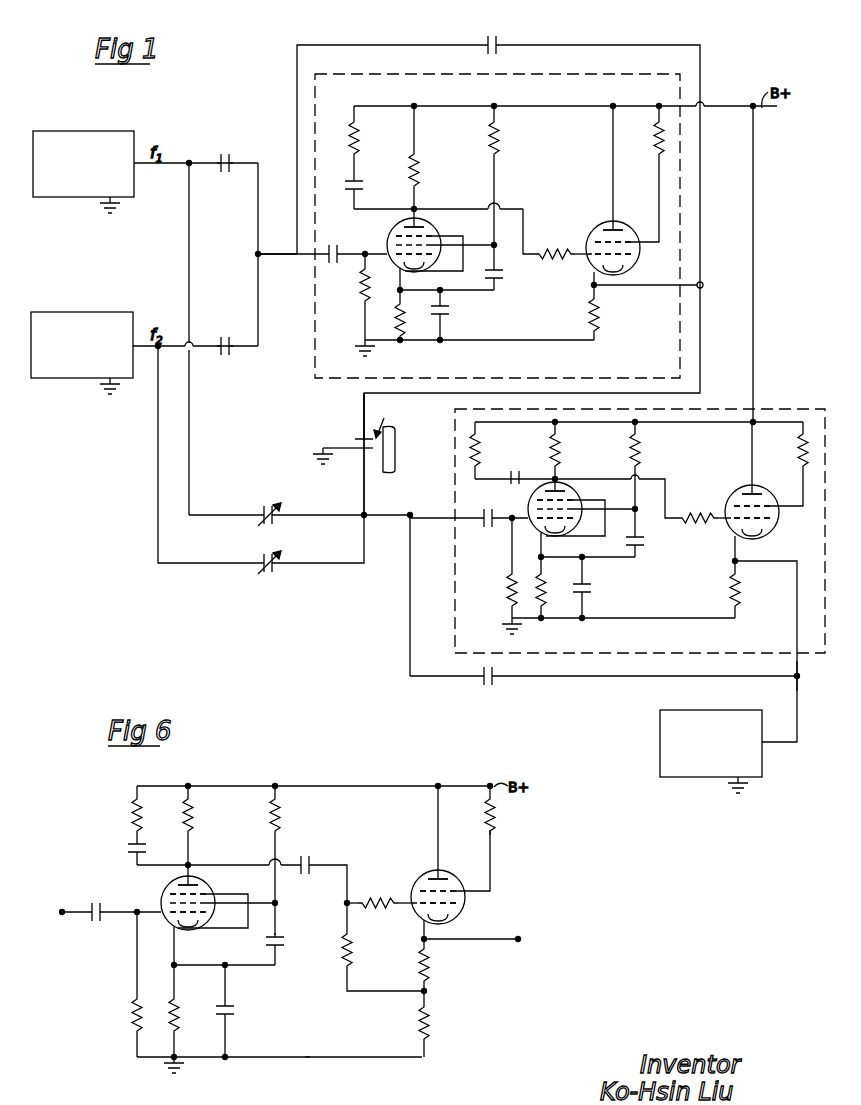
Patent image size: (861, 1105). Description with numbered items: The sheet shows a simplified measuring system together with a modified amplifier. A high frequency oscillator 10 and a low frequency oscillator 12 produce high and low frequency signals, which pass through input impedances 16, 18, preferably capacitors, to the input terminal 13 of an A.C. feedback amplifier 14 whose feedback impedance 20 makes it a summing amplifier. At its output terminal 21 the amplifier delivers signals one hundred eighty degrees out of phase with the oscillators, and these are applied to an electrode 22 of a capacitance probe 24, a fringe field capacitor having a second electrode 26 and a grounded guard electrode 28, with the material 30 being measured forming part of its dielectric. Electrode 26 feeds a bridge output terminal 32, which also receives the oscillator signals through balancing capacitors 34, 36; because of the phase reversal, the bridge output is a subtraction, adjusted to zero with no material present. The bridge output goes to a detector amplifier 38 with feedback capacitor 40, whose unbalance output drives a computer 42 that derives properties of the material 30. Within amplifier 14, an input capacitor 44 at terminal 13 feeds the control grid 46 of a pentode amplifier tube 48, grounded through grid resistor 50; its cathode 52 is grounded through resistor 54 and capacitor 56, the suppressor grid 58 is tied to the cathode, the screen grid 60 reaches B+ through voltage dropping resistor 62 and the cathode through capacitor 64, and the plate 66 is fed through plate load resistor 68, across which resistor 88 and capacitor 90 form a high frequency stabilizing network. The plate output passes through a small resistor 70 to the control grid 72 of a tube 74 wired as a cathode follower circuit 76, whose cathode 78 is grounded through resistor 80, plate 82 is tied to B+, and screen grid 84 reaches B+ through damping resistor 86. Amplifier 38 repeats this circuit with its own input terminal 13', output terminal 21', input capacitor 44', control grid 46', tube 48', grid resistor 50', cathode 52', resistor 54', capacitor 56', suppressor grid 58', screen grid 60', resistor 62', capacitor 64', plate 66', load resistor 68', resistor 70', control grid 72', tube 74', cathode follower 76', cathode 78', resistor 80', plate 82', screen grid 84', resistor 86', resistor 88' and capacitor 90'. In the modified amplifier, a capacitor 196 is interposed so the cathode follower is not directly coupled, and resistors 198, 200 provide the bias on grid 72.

In FIG. 1, the oscillator 10 is at (104, 131).
In FIG. 1, the oscillator 12 is at (103, 312).
In FIG. 1, the input terminal 13 is at (277, 271).
In FIG. 1, the input terminal 13' is at (430, 582).
In FIG. 1, the A.C. feedback amplifier 14 is at (540, 74).
In FIG. 6, the A.C. feedback amplifier 14 is at (304, 1063).
In FIG. 1, the input impedance 16 is at (231, 158).
In FIG. 1, the input impedance 18 is at (231, 341).
In FIG. 1, the feedback impedance 20 is at (498, 42).
In FIG. 1, the output terminal 21 is at (665, 286).
In FIG. 1, the output terminal 21' is at (814, 676).
In FIG. 1, the electrode 22 is at (362, 434).
In FIG. 1, the capacitance probe 24 is at (385, 416).
In FIG. 1, the electrode 26 is at (360, 450).
In FIG. 1, the grounded guard electrode 28 is at (344, 440).
In FIG. 1, the material 30 is at (397, 434).
In FIG. 1, the bridge output terminal 32 is at (368, 514).
In FIG. 1, the balancing capacitor 34 is at (258, 512).
In FIG. 1, the balancing capacitor 36 is at (258, 560).
In FIG. 1, the detector amplifier 38 is at (772, 409).
In FIG. 1, the capacitor 40 is at (481, 680).
In FIG. 1, the computer 42 is at (660, 736).
In FIG. 1, the input capacitor 44 is at (322, 238).
In FIG. 6, the input capacitor 44 is at (106, 901).
In FIG. 1, the control grid 46 is at (389, 274).
In FIG. 6, the control grid 46 is at (157, 944).
In FIG. 1, the amplifier tube 48 is at (425, 242).
In FIG. 6, the amplifier tube 48 is at (200, 899).
In FIG. 1, the grid resistor 50 is at (352, 297).
In FIG. 6, the grid resistor 50 is at (151, 984).
In FIG. 1, the cathode 52 is at (434, 261).
In FIG. 6, the cathode 52 is at (213, 924).
In FIG. 1, the resistor 54 is at (387, 315).
In FIG. 6, the resistor 54 is at (187, 1011).
In FIG. 1, the capacitor 56 is at (450, 315).
In FIG. 6, the capacitor 56 is at (236, 1011).
In FIG. 1, the suppressor grid 58 is at (391, 227).
In FIG. 6, the suppressor grid 58 is at (162, 884).
In FIG. 1, the screen grid 60 is at (394, 246).
In FIG. 6, the screen grid 60 is at (162, 905).
In FIG. 1, the voltage dropping resistor 62 is at (510, 186).
In FIG. 6, the voltage dropping resistor 62 is at (290, 860).
In FIG. 1, the capacitor 64 is at (504, 285).
In FIG. 6, the capacitor 64 is at (288, 940).
In FIG. 1, the plate 66 is at (400, 216).
In FIG. 6, the plate 66 is at (174, 873).
In FIG. 1, the plate load resistor 68 is at (430, 157).
In FIG. 6, the plate load resistor 68 is at (205, 825).
In FIG. 1, the resistor 70 is at (557, 241).
In FIG. 6, the resistor 70 is at (379, 888).
In FIG. 1, the control grid 72 is at (597, 270).
In FIG. 6, the control grid 72 is at (423, 917).
In FIG. 1, the tube 74 is at (645, 200).
In FIG. 6, the tube 74 is at (473, 860).
In FIG. 1, the cathode follower circuit 76 is at (611, 213).
In FIG. 6, the cathode follower circuit 76 is at (426, 865).
In FIG. 1, the cathode 78 is at (629, 276).
In FIG. 6, the cathode 78 is at (454, 928).
In FIG. 1, the resistor 80 is at (610, 312).
In FIG. 6, the resistor 80 is at (439, 1024).
In FIG. 1, the plate 82 is at (600, 168).
In FIG. 6, the plate 82 is at (426, 832).
In FIG. 1, the screen grid 84 is at (594, 229).
In FIG. 6, the screen grid 84 is at (421, 879).
In FIG. 1, the resistor 86 is at (642, 132).
In FIG. 6, the resistor 86 is at (504, 810).
In FIG. 1, the resistor 88 is at (370, 141).
In FIG. 6, the resistor 88 is at (151, 813).
In FIG. 1, the capacitor 90 is at (367, 185).
In FIG. 6, the capacitor 90 is at (149, 843).
In FIG. 6, the capacitor 196 is at (312, 858).
In FIG. 6, the resistor 198 is at (351, 950).
In FIG. 6, the resistor 200 is at (428, 968).
In FIG. 1, the input capacitor 44' is at (469, 503).
In FIG. 1, the control grid 46' is at (528, 544).
In FIG. 1, the amplifier tube 48' is at (578, 509).
In FIG. 1, the grid resistor 50' is at (494, 568).
In FIG. 1, the cathode 52' is at (575, 528).
In FIG. 1, the resistor 54' is at (556, 587).
In FIG. 1, the capacitor 56' is at (597, 587).
In FIG. 1, the suppressor grid 58' is at (536, 494).
In FIG. 1, the screen grid 60' is at (536, 510).
In FIG. 1, the voltage dropping resistor 62' is at (653, 477).
In FIG. 1, the capacitor 64' is at (649, 552).
In FIG. 1, the plate 66' is at (576, 488).
In FIG. 1, the plate load resistor 68' is at (573, 450).
In FIG. 1, the resistor 70' is at (694, 530).
In FIG. 1, the control grid 72' is at (737, 534).
In FIG. 1, the tube 74' is at (786, 488).
In FIG. 1, the cathode follower circuit 76' is at (746, 485).
In FIG. 1, the cathode 78' is at (767, 548).
In FIG. 1, the resistor 80' is at (752, 589).
In FIG. 1, the plate 82' is at (739, 458).
In FIG. 1, the screen grid 84' is at (734, 495).
In FIG. 1, the resistor 86' is at (786, 446).
In FIG. 1, the resistor 88' is at (492, 450).
In FIG. 1, the capacitor 90' is at (518, 465).